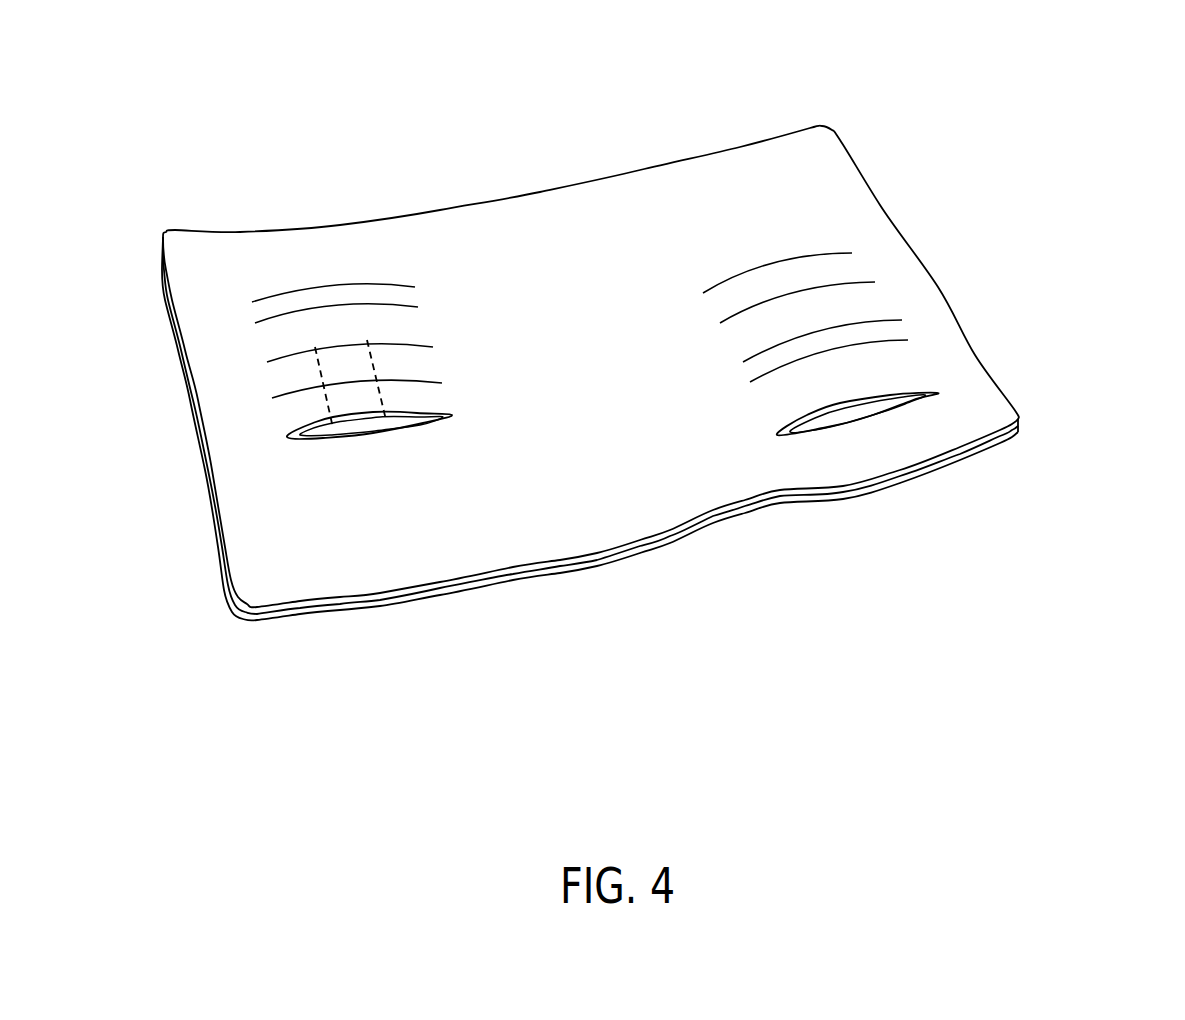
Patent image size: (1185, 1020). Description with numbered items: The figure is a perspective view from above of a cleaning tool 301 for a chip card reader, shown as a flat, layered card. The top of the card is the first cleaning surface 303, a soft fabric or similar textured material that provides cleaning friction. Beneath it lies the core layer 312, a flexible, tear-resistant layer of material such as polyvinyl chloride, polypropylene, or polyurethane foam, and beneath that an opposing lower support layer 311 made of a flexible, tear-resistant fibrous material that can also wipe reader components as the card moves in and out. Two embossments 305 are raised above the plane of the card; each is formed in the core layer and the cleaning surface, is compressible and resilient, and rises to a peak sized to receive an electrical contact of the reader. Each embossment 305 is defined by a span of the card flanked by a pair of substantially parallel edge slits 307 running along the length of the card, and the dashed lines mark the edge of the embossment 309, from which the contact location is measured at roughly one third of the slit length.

The pad assembly 301 is at (194, 106).
The first cleaning surface 303 is at (273, 535).
The embossment 305 is at (297, 412).
The edge slit 307 is at (357, 455).
The edge of the embossment 309 is at (341, 367).
The support layer 311 is at (367, 610).
The core layer 312 is at (328, 610).